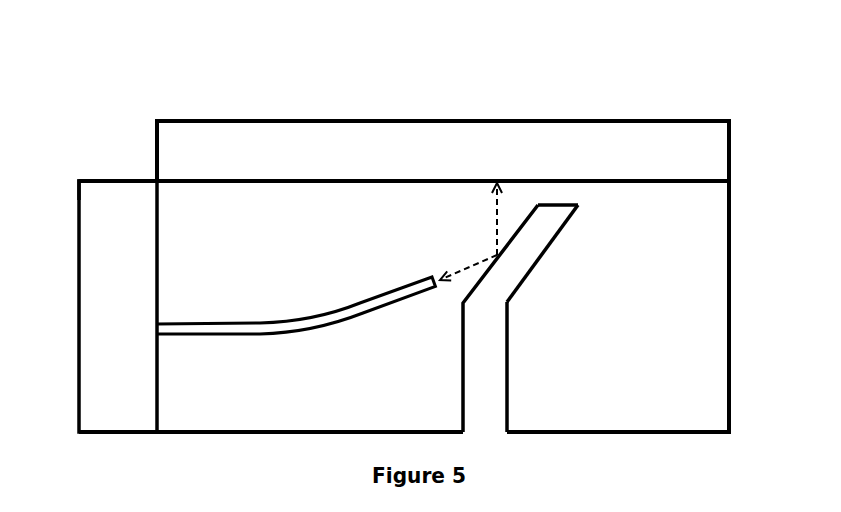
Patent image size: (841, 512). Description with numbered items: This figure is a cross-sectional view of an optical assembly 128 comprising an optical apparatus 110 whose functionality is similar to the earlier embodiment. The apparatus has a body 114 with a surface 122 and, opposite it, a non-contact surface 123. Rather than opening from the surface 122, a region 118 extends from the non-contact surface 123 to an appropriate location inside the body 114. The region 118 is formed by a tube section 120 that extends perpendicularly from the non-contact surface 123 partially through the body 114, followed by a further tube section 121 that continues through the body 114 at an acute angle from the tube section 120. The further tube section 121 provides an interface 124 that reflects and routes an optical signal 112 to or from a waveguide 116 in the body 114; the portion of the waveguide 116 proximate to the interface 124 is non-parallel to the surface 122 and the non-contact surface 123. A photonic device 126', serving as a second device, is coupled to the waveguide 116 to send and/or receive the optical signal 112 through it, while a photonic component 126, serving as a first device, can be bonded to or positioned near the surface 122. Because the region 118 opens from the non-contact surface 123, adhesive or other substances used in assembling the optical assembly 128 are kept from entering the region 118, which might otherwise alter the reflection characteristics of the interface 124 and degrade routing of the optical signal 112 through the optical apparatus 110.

The optical apparatus 110 is at (752, 181).
The optical signal 112 is at (471, 232).
The body 114 is at (713, 242).
The waveguide 116 is at (212, 322).
The region 118 is at (500, 282).
The tube section 120 is at (508, 369).
The further tube section 121 is at (574, 208).
The surface 122 is at (245, 180).
The non-contact surface 123 is at (253, 434).
The interface 124 is at (515, 237).
The photonic component 126 is at (443, 151).
The photonic device 126' is at (118, 306).
The optical assembly 128 is at (108, 138).